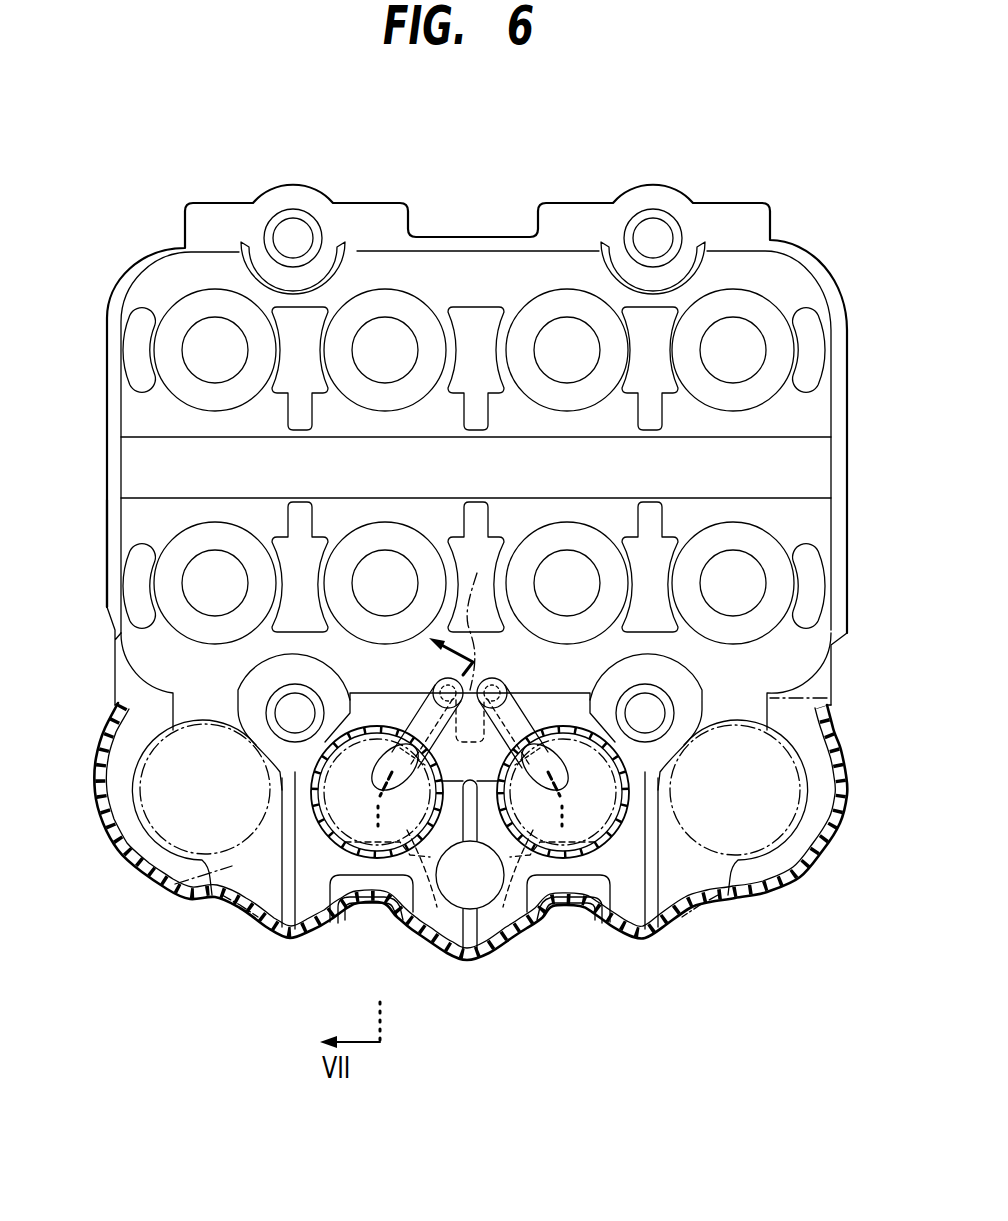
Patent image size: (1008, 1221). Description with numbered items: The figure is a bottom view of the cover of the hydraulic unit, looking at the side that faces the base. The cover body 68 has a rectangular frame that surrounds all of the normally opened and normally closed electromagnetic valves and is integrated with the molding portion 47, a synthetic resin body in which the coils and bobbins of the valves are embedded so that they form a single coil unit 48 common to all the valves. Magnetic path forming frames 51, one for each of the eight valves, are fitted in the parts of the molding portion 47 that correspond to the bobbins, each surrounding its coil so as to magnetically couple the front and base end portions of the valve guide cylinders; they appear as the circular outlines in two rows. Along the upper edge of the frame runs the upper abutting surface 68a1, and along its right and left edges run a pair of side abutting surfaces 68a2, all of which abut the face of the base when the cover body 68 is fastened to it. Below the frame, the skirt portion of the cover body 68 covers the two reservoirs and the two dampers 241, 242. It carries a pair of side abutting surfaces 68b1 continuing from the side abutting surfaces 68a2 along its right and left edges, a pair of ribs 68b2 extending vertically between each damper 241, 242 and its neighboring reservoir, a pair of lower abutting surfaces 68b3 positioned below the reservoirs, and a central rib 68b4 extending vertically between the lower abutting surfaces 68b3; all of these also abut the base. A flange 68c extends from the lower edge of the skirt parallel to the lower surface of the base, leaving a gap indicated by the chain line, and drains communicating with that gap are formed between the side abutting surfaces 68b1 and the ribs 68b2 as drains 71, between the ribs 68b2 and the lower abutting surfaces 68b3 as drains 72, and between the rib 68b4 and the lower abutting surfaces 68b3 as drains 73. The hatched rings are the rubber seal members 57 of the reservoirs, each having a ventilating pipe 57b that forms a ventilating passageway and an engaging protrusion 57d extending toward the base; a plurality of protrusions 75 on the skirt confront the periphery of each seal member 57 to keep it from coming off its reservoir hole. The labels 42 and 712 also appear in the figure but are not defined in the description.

The cover body 68 is at (449, 228).
The coil unit 48 is at (577, 222).
The magnetic path forming frames 51 is at (196, 305).
The upper abutting surface 68a1 is at (457, 252).
The side abutting surfaces 68a2 is at (110, 322).
The molding portion 47 is at (808, 412).
The side edge portion 712 is at (108, 548).
The flange 68c is at (840, 815).
The drains 73 is at (447, 930).
The rib 68b4 is at (472, 915).
The drains 72 is at (292, 915).
The seal members 57 is at (322, 862).
The ventilating pipe 57b is at (410, 720).
The engaging protrusion 57d is at (492, 683).
The passage 42 is at (440, 613).
The lower abutting surfaces 68b3 is at (380, 883).
The protrusions 75 is at (433, 860).
The side abutting surfaces 68b1 is at (145, 848).
The ribs 68b2 is at (285, 827).
The drains 71 is at (238, 915).
The damper 241 is at (772, 712).
The damper 242 is at (205, 905).